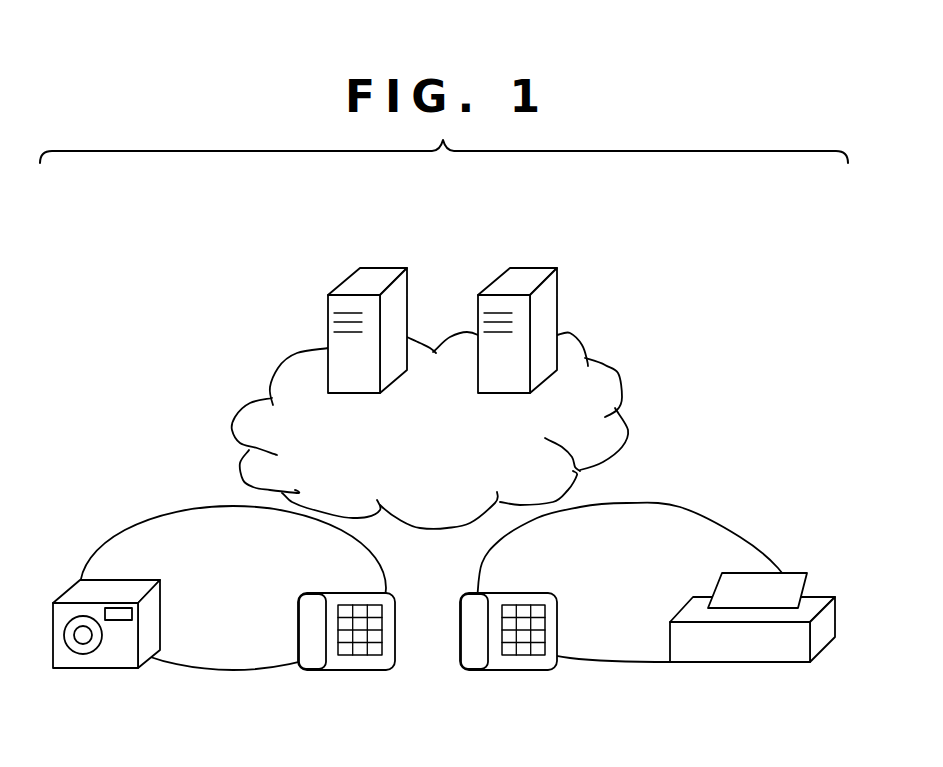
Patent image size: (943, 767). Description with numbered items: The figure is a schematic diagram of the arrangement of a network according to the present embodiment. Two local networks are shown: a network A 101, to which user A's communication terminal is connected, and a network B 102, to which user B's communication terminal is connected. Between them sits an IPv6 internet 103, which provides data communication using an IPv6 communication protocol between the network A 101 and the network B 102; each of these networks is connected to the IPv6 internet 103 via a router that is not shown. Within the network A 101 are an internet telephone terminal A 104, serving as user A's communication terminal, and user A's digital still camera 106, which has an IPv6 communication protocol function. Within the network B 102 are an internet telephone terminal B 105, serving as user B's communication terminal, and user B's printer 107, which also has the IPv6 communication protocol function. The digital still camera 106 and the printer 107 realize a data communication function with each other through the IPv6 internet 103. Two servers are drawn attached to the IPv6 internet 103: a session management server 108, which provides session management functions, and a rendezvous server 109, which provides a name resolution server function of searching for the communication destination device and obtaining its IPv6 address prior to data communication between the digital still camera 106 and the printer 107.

The network A 101 is at (167, 510).
The network B 102 is at (690, 510).
The IPv6 internet 103 is at (620, 378).
The internet telephone terminal A 104 is at (348, 670).
The internet telephone terminal B 105 is at (510, 670).
The digital still camera 106 is at (93, 670).
The printer 107 is at (740, 662).
The session management server 108 is at (528, 268).
The rendezvous server 109 is at (378, 268).